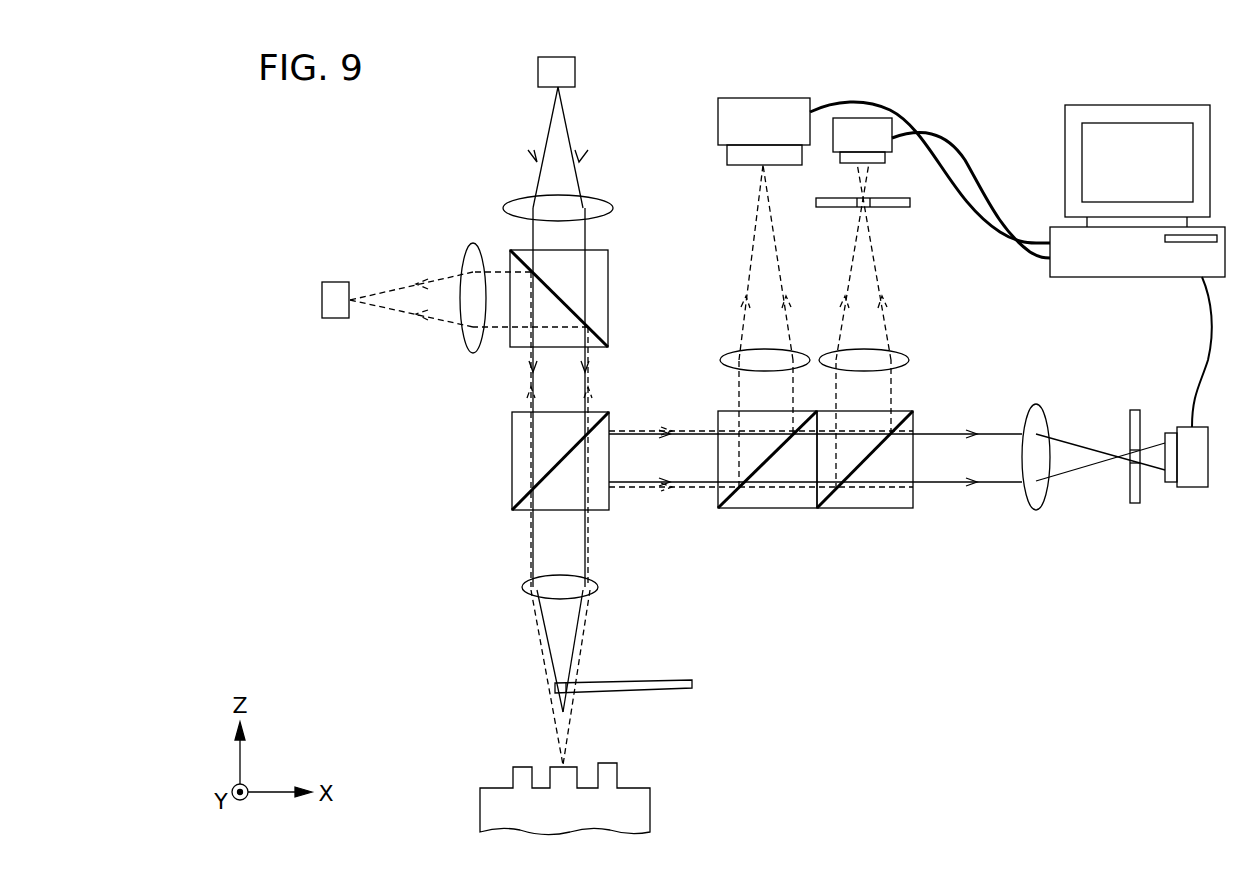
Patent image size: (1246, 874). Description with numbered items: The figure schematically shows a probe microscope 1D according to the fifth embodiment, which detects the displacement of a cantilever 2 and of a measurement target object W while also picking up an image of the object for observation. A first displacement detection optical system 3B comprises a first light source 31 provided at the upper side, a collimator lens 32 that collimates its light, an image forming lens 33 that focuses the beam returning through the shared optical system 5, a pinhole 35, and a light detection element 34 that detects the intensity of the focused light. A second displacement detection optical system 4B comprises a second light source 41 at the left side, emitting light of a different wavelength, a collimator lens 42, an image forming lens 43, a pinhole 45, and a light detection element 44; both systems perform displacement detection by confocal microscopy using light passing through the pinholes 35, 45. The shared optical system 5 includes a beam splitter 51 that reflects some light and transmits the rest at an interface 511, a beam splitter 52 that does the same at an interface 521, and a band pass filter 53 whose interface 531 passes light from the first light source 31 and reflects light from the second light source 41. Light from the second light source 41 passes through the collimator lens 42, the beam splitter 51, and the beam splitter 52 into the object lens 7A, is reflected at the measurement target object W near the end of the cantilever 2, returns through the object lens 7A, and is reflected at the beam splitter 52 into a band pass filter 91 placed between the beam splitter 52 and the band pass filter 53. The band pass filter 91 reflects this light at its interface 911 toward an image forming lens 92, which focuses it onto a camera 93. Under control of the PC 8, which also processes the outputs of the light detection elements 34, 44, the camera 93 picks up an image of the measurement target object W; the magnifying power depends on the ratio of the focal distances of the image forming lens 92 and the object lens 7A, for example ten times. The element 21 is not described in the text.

The probe microscope 1D is at (990, 108).
The cantilever 2 is at (640, 682).
The stage end portion 21 is at (555, 692).
The first displacement detection optical system 3B is at (637, 100).
The first light source 31 is at (575, 72).
The collimator lens 32 is at (595, 204).
The image forming lens 33 is at (1038, 503).
The light detection element 34 is at (1192, 487).
The pinhole 35 is at (1133, 503).
The second displacement detection optical system 4B is at (358, 183).
The second light source 41 is at (336, 282).
The collimator lens 42 is at (473, 247).
The image forming lens 43 is at (903, 357).
The light detection element 44 is at (893, 148).
The pinhole 45 is at (895, 207).
The shared optical system 5 is at (630, 309).
The beam splitter 51 is at (600, 302).
The interface 511 is at (514, 252).
The beam splitter 52 is at (610, 423).
The interface 521 is at (525, 492).
The band pass filter 53 is at (828, 420).
The interface 531 is at (834, 495).
The object lens 7A is at (597, 583).
The PC 8 is at (1093, 272).
The band pass filter 91 is at (787, 502).
The interface 911 is at (730, 497).
The image forming lens 92 is at (727, 364).
The camera 93 is at (766, 108).
The measurement target object W is at (645, 808).